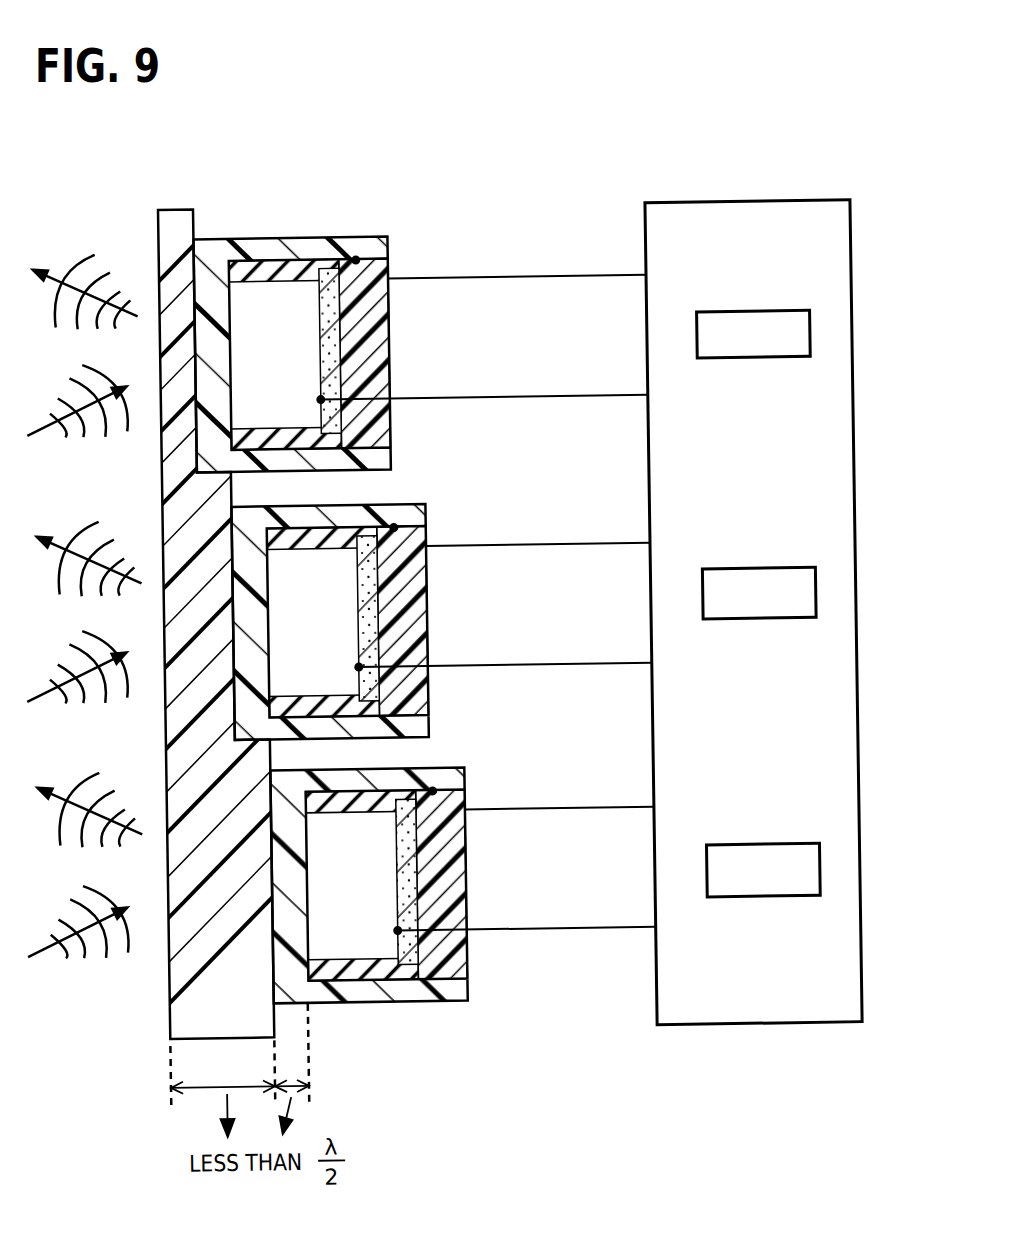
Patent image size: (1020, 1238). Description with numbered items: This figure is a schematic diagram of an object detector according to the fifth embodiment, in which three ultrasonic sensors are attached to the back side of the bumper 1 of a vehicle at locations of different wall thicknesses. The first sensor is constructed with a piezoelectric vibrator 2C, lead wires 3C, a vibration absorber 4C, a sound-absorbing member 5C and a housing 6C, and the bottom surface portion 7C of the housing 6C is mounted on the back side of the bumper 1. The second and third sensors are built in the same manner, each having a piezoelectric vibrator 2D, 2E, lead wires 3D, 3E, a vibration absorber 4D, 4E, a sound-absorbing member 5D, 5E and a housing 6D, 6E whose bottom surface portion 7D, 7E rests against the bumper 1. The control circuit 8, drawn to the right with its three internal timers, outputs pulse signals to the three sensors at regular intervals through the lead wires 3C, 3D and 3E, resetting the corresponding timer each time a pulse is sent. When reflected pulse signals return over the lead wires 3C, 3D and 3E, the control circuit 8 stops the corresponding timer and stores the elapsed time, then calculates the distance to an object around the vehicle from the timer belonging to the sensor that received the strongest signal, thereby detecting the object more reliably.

The bumper 1 is at (184, 212).
The piezoelectric vibrator 2C is at (265, 290).
The piezoelectric vibrator 2D is at (302, 568).
The piezoelectric vibrator 2E is at (328, 832).
The lead wires 3C is at (572, 280).
The lead wires 3D is at (571, 548).
The lead wires 3E is at (576, 812).
The vibration absorber 4C is at (360, 339).
The vibration absorber 4D is at (395, 626).
The vibration absorber 4E is at (429, 882).
The sound-absorbing member 5C is at (332, 413).
The sound-absorbing member 5D is at (367, 693).
The sound-absorbing member 5E is at (402, 949).
The housing 6C is at (372, 256).
The housing 6D is at (404, 523).
The housing 6E is at (438, 791).
The bottom surface portion 7C is at (213, 330).
The bottom surface portion 7D is at (254, 605).
The bottom surface portion 7E is at (281, 870).
The control circuit 8 is at (731, 210).